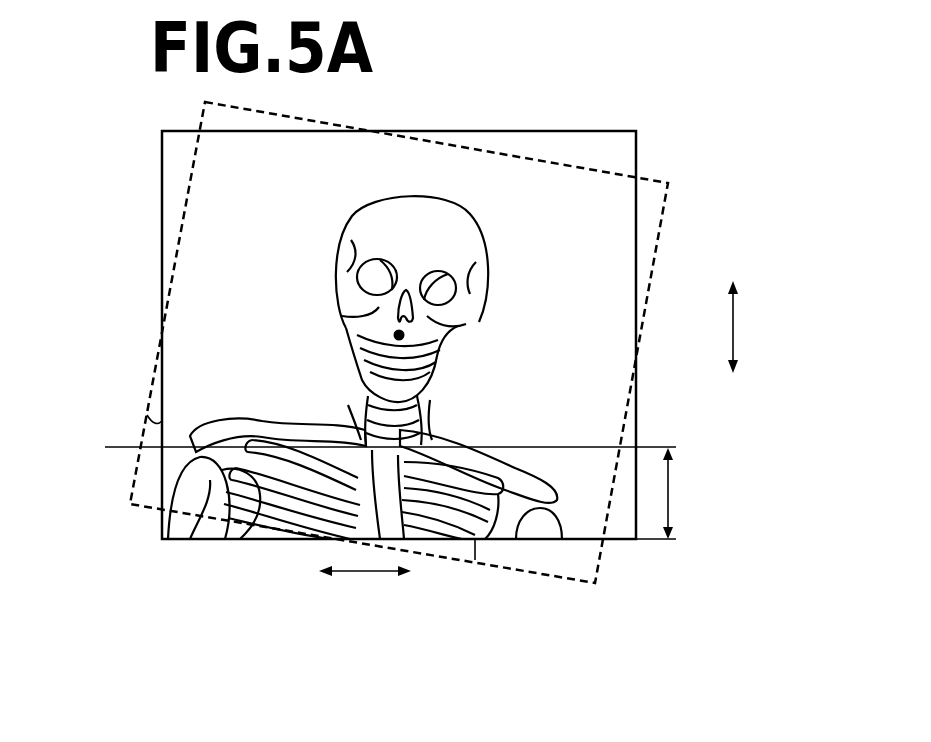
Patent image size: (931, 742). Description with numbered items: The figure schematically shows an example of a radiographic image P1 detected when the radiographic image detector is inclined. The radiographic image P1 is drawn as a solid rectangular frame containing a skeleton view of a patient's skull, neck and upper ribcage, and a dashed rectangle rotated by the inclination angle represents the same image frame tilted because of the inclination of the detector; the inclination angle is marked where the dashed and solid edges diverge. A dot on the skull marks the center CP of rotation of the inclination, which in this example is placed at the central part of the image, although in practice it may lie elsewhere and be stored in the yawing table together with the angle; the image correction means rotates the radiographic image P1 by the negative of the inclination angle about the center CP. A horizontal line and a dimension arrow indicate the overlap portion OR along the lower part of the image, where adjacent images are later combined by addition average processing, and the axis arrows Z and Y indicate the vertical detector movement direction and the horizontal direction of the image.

The radiographic image P1 is at (460, 128).
The center of rotation CP is at (406, 336).
The overlap portion OR is at (688, 493).
The Z axis direction Z is at (735, 325).
The Y axis direction Y is at (368, 573).